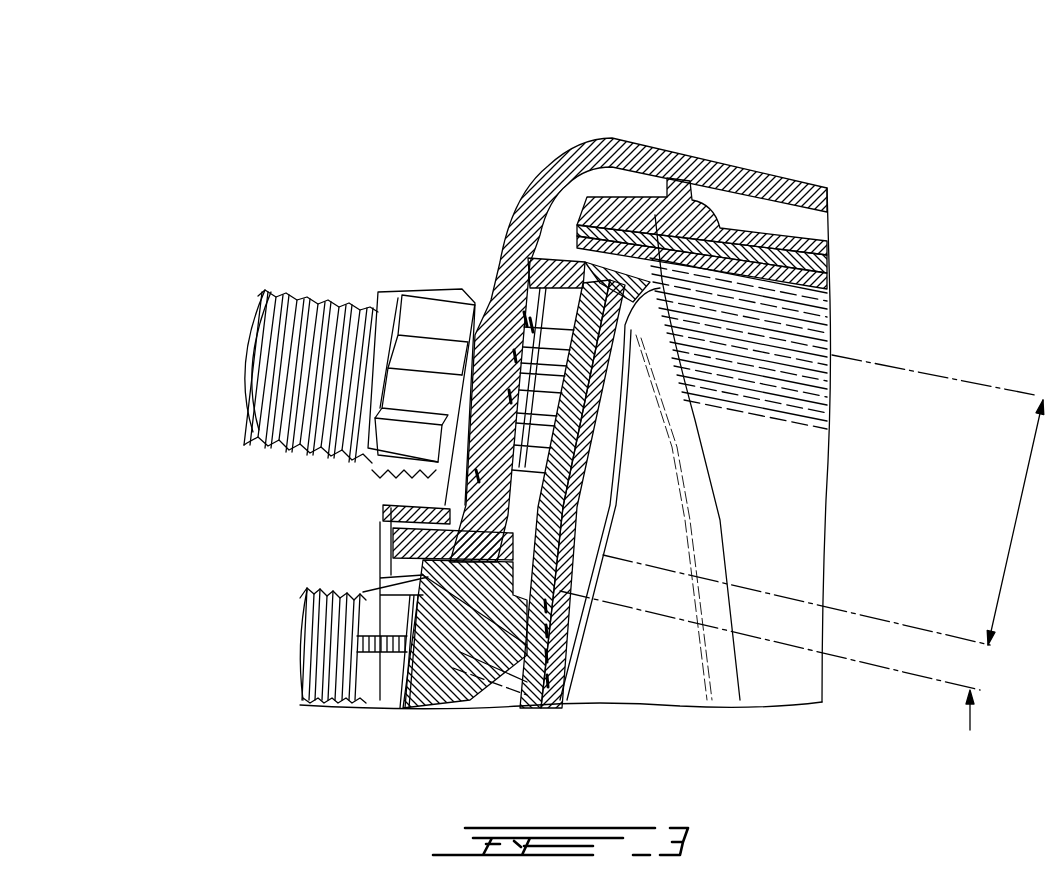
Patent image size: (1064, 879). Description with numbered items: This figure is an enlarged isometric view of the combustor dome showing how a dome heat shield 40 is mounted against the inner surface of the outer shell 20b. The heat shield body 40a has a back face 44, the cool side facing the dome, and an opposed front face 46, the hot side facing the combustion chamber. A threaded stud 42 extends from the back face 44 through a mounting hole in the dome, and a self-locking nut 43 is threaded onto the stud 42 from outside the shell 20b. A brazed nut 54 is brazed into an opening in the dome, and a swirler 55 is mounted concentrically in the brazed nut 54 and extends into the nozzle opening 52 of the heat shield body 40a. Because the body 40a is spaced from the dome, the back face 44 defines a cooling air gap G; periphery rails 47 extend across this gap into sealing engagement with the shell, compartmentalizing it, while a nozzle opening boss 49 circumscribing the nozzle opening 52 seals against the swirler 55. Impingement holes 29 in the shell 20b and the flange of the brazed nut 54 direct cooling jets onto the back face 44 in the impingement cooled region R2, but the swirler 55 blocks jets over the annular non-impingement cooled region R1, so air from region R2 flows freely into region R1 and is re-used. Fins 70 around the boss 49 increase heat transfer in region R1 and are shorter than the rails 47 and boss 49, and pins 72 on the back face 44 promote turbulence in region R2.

The outer shell 20b is at (593, 138).
The dome heat shield 40 is at (593, 423).
The heat shield body 40a is at (663, 663).
The threaded stud 42 is at (290, 290).
The self-locking nut 43 is at (430, 300).
The back face 44 is at (580, 530).
The front face 46 is at (588, 493).
The periphery rail 47 is at (552, 285).
The impingement hole 29 is at (538, 330).
The pin 72 is at (547, 370).
The cooling air gap G is at (540, 416).
The brazed nut 54 is at (378, 520).
The swirler 55 is at (407, 575).
The fin 70 is at (410, 698).
The nozzle opening boss 49 is at (487, 605).
The nozzle opening 52 is at (545, 660).
The non-impingement cooled region R1 is at (778, 660).
The impingement cooled region R2 is at (823, 500).